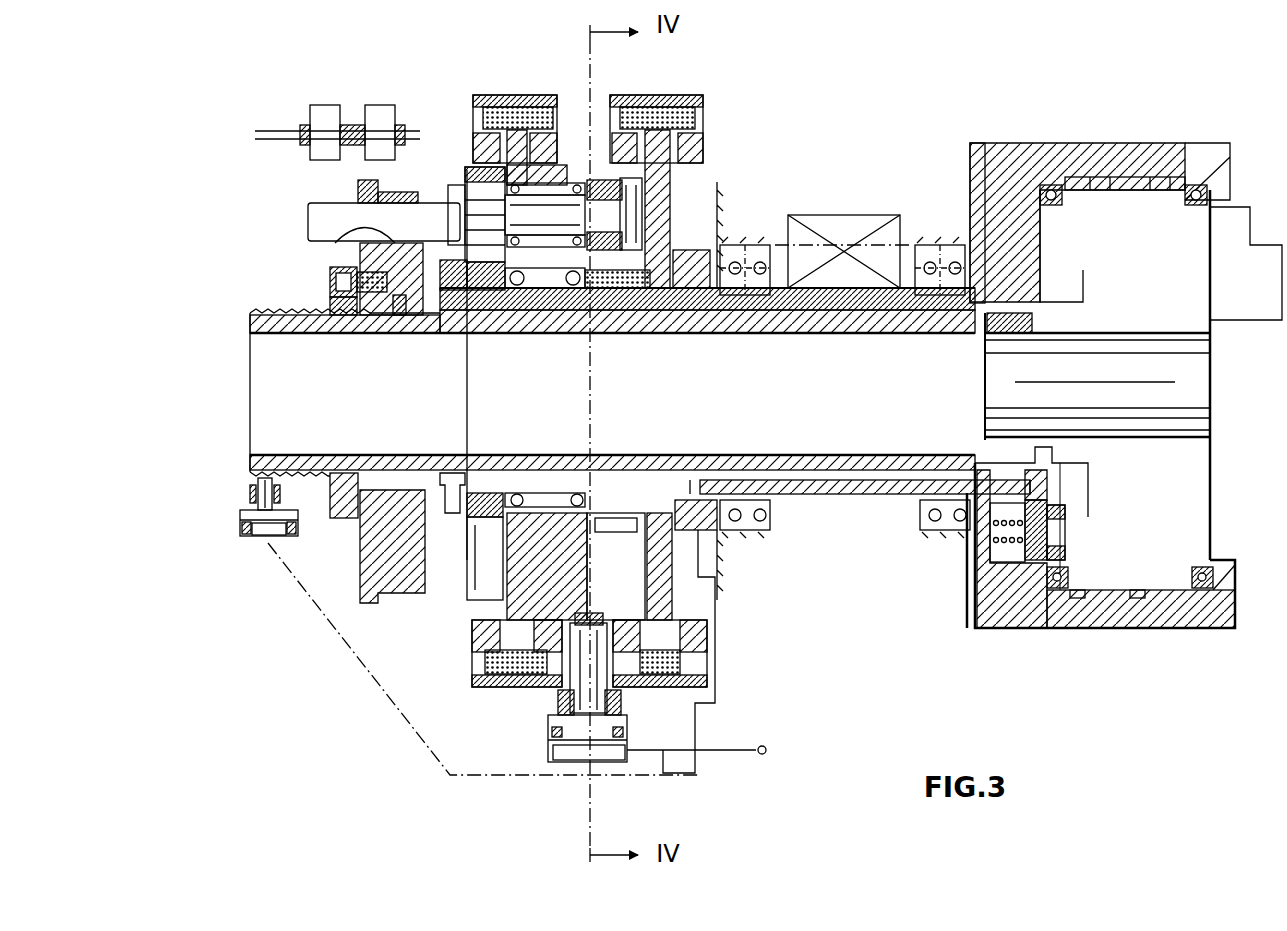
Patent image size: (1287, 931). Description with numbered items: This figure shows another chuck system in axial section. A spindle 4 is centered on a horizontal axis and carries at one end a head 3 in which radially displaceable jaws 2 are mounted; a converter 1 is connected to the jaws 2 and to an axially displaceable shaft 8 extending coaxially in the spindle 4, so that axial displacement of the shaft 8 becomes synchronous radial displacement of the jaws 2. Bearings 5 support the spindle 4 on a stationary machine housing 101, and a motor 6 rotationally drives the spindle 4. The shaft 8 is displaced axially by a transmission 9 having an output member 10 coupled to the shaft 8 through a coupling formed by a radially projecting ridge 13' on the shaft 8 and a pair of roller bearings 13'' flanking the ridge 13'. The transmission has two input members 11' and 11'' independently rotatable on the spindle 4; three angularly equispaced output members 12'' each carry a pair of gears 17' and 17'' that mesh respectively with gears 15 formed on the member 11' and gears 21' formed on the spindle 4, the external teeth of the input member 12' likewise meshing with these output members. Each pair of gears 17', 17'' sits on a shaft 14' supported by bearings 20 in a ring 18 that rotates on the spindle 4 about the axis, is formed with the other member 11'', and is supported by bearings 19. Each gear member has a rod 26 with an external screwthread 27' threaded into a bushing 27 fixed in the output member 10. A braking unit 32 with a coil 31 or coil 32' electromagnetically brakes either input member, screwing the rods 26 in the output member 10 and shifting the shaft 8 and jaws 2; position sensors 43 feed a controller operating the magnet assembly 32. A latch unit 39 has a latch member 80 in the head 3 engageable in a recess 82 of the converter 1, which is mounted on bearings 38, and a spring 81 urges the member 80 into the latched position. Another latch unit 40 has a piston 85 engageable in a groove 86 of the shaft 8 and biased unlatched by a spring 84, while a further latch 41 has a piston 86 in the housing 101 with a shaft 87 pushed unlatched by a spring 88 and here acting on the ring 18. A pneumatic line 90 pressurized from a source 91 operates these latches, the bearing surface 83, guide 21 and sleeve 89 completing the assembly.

The converter 1 is at (1190, 490).
The jaws 2 is at (1262, 265).
The head 3 is at (1100, 150).
The spindle 4 is at (871, 499).
The bearings 5 is at (748, 250).
The motor 6 is at (845, 210).
The shaft 8 is at (701, 323).
The motion converter or transmission 9 is at (596, 104).
The output member 10 is at (357, 600).
The bevel gear 11' is at (707, 401).
The bevel gear 11'' is at (477, 335).
The input member 12' is at (647, 214).
The output members 12'' is at (457, 206).
The ridge 13' is at (612, 392).
The roller bearings 13'' is at (368, 325).
The shaft 14' is at (545, 326).
The gears 15 is at (616, 566).
The gear 17' is at (676, 209).
The gear 17'' is at (443, 175).
The ring 18 is at (562, 180).
The bearings 19 is at (545, 290).
The bearings 20 is at (525, 242).
The hub 21 is at (468, 546).
The gears 21' is at (486, 327).
The stem or rod 26 is at (306, 210).
The bushing 27 is at (333, 272).
The external screwthread 27' is at (320, 188).
The coil 31 is at (490, 97).
The braking unit 32 is at (612, 83).
The coil 32' is at (603, 669).
The bearings 38 is at (1165, 185).
The latch unit 39 is at (1015, 578).
The latch unit 40 is at (257, 481).
The latch 41 is at (620, 703).
The position sensors 43 is at (374, 98).
The latch member 80 is at (1060, 546).
The spring 81 is at (988, 543).
The recess 82 is at (1065, 520).
The support 83 is at (990, 560).
The spring 84 is at (248, 510).
The member or piston 85 is at (260, 535).
The groove / piston 86 is at (300, 474).
The shaft 87 is at (560, 722).
The spring 88 is at (560, 700).
The bolt 89 is at (595, 625).
The pneumatic line 90 is at (718, 658).
The source 91 is at (767, 748).
The machine housing 101 is at (975, 188).